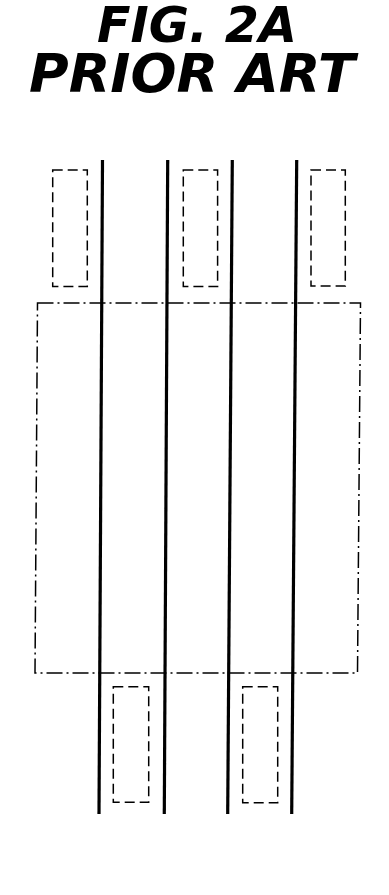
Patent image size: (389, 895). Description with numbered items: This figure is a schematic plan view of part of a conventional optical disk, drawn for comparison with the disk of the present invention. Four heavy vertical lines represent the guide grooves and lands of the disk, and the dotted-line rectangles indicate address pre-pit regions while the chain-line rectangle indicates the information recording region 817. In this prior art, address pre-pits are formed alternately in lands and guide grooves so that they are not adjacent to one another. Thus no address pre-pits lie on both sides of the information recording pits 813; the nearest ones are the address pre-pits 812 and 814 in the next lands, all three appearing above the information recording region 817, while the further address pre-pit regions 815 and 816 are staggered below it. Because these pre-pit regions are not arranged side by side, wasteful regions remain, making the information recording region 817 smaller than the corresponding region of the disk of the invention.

The address pre-pit 812 is at (75, 170).
The information recording pits 813 is at (205, 170).
The address pre-pit 814 is at (333, 170).
The address pre-pit region 815 is at (136, 802).
The address pre-pit region 816 is at (262, 803).
The information recording region 817 is at (313, 673).